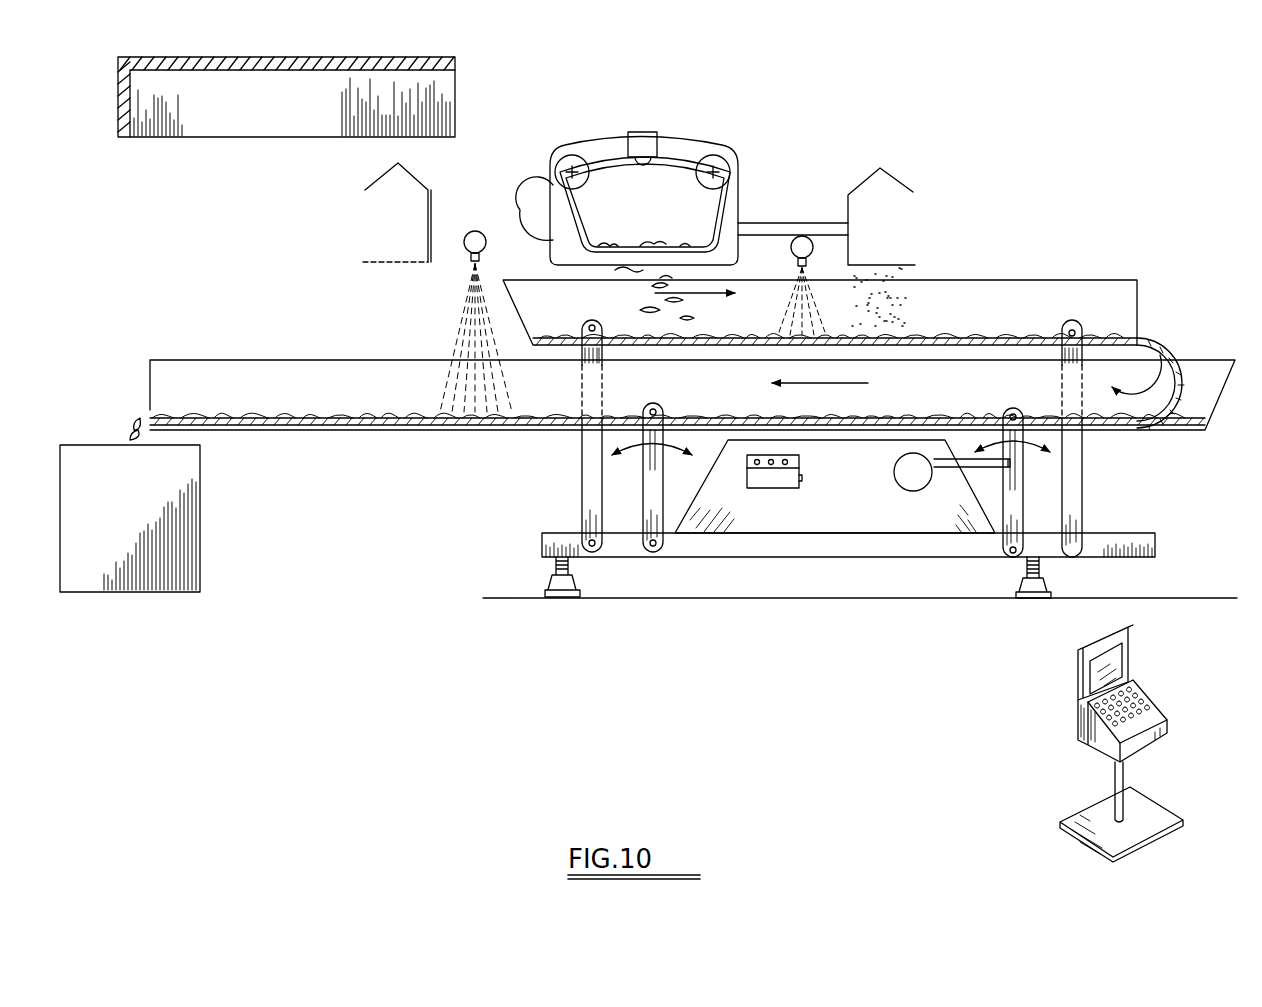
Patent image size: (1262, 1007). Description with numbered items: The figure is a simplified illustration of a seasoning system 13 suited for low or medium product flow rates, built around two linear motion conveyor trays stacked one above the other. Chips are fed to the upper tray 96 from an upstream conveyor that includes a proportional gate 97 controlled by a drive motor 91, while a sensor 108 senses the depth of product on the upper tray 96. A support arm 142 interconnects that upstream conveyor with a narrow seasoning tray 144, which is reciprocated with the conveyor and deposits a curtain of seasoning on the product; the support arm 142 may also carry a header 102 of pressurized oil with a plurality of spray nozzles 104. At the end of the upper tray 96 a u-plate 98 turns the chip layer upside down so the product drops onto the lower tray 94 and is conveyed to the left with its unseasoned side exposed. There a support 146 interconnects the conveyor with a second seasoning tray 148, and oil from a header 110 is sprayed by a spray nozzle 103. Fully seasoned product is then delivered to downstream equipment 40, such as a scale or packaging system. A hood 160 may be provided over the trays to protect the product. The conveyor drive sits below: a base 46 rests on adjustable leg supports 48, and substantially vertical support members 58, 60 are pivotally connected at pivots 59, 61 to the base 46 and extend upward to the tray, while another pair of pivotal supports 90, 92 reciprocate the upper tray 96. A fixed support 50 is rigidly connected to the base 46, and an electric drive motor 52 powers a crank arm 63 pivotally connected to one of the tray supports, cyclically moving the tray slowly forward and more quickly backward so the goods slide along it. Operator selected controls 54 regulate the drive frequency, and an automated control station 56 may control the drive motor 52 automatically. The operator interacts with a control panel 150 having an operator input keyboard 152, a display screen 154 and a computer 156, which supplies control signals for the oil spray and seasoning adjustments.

The seasoning system 13 is at (262, 260).
The downstream equipment 40 is at (134, 508).
The base 46 is at (852, 557).
The adjustable leg supports 48 is at (550, 582).
The fixed support 50 is at (876, 523).
The electric drive motor 52 is at (896, 474).
The operator selected controls 54 is at (747, 445).
The automated control station 56 is at (783, 490).
The support member 58 is at (1028, 505).
The pivot 59 is at (1003, 545).
The support member 60 is at (658, 482).
The pivot 61 is at (814, 547).
The crank arm 63 is at (968, 470).
The pivotal support 90 is at (1082, 482).
The drive motor 91 is at (538, 185).
The pivotal support 92 is at (595, 448).
The lower tray 94 is at (297, 425).
The upper tray 96 is at (1128, 302).
The proportional gate 97 is at (700, 146).
The u-plate 98 is at (1172, 342).
The header 102 is at (848, 248).
The spray nozzle 103 is at (823, 310).
The spray nozzles 104 is at (792, 253).
The sensor 108 is at (642, 130).
The header 110 is at (395, 212).
The support arm 142 is at (757, 223).
The seasoning tray 144 is at (905, 160).
The support 146 is at (508, 218).
The seasoning tray 148 is at (448, 158).
The control panel 150 is at (1089, 743).
The operator input keyboard 152 is at (1148, 690).
The display screen 154 is at (1131, 651).
The computer 156 is at (1166, 728).
The hood 160 is at (345, 58).